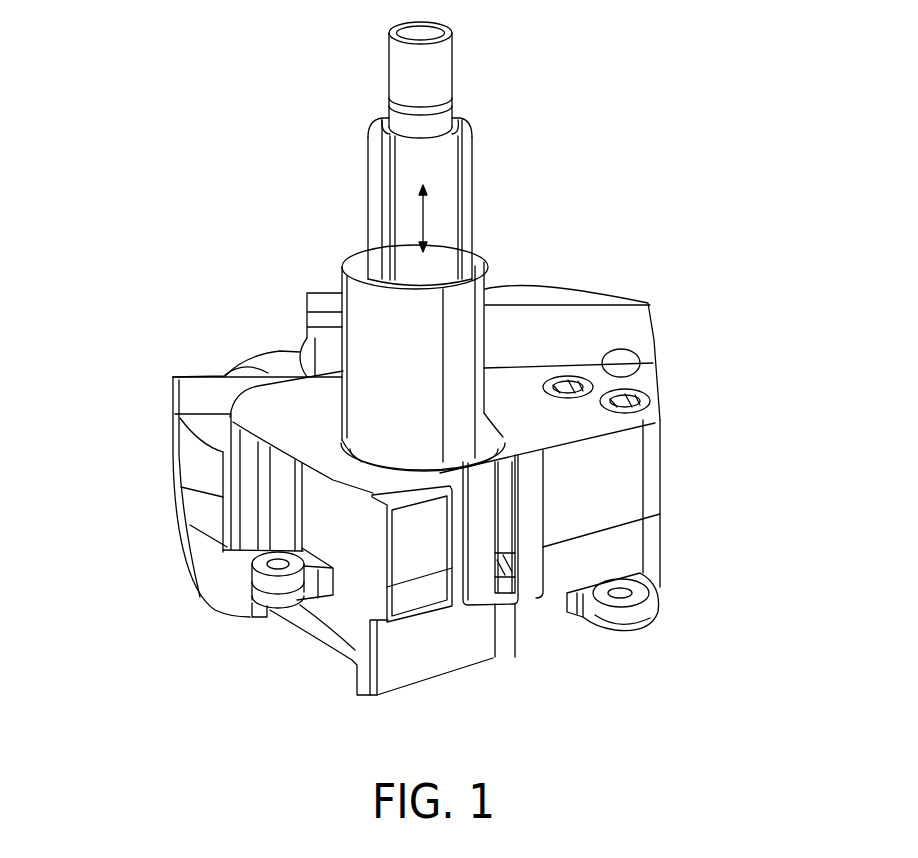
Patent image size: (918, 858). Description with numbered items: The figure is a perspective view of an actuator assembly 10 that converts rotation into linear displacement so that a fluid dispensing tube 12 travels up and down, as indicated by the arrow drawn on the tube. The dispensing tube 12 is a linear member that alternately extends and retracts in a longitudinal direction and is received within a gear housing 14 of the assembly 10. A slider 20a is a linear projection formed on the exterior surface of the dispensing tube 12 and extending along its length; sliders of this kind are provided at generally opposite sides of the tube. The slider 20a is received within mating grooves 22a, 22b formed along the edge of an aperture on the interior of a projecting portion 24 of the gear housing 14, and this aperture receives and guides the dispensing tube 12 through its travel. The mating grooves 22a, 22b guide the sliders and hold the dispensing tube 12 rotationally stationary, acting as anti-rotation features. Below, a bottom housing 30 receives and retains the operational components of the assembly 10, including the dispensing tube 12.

The actuator assembly 10 is at (150, 175).
The fluid dispensing tube 12 is at (458, 55).
The gear housing 14 is at (283, 414).
The slider 20a is at (368, 188).
The mating groove 22a is at (345, 278).
The mating groove 22b is at (489, 254).
The projecting portion 24 is at (376, 432).
The bottom housing 30 is at (650, 557).